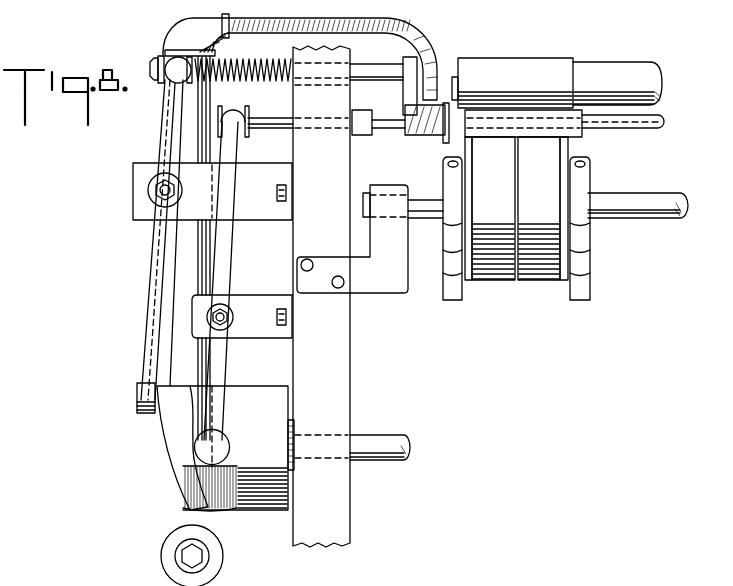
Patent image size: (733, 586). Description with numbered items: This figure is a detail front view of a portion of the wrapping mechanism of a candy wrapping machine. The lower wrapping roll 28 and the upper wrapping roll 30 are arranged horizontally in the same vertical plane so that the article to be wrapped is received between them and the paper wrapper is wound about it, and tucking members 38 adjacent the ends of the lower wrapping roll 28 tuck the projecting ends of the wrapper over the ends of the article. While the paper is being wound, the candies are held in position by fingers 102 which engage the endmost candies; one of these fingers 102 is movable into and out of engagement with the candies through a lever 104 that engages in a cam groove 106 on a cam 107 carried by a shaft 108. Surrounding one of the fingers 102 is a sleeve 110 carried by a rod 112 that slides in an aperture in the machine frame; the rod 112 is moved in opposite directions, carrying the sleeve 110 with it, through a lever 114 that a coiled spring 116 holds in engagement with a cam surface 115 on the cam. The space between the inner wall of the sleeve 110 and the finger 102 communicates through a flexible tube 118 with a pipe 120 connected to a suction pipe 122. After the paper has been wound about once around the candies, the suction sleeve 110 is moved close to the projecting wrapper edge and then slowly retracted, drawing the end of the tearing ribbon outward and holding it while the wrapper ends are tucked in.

The flexible tube 118 is at (402, 25).
The coiled spring 116 is at (237, 62).
The rod 112 is at (360, 67).
The upper wrapping roll 30 is at (502, 65).
The sleeve 110 is at (425, 133).
The fingers 102 is at (472, 140).
The tucking members 38 is at (455, 265).
The lower wrapping roll 28 is at (500, 273).
The lever 104 is at (230, 255).
The pipe 120 is at (182, 248).
The lever 114 is at (155, 283).
The cam 107 is at (267, 398).
The shaft 108 is at (377, 440).
The cam surface 115 is at (160, 437).
The cam groove 106 is at (235, 505).
The suction pipe 122 is at (168, 547).